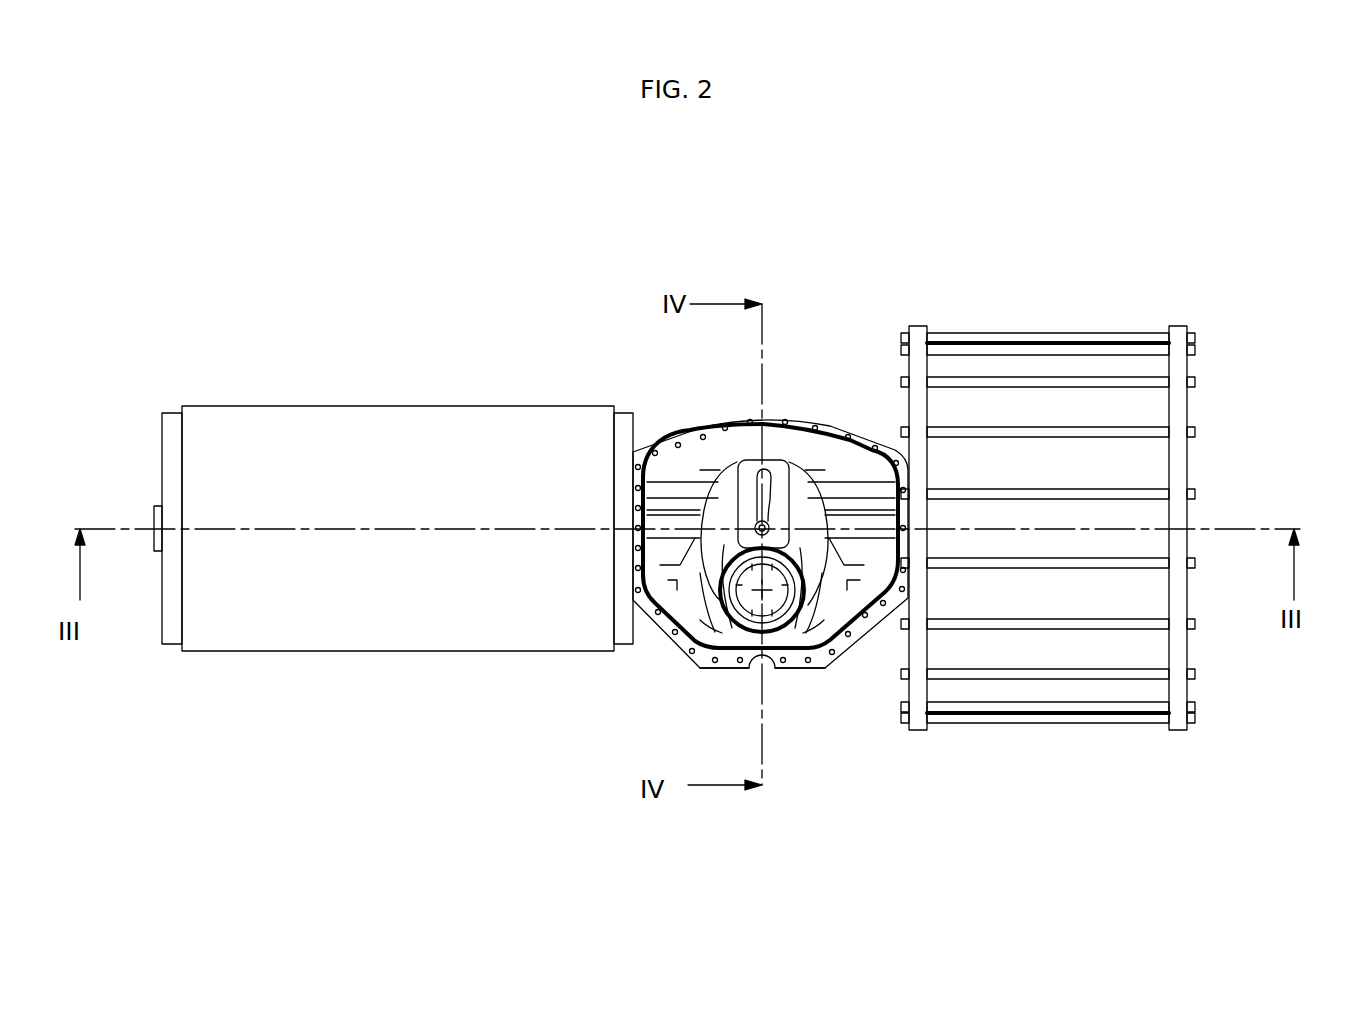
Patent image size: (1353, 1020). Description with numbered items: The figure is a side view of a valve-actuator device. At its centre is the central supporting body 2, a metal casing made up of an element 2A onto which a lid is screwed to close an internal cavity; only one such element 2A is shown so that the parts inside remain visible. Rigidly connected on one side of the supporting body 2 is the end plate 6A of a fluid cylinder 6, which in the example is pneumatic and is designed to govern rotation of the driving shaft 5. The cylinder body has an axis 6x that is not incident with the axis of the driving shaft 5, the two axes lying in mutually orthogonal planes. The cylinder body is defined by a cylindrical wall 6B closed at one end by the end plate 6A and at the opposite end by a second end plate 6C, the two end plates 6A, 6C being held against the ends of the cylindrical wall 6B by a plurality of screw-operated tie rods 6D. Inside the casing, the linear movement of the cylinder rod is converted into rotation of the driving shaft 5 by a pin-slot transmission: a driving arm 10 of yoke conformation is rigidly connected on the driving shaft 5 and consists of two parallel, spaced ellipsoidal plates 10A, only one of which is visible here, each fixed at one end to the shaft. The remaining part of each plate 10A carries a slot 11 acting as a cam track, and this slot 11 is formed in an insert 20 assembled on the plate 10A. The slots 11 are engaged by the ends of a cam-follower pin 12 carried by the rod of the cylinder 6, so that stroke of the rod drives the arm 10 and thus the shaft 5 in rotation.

The central supporting body 2 is at (703, 419).
The element 2A is at (725, 665).
The driving shaft 5 is at (778, 628).
The fluid cylinder 6 is at (1074, 497).
The end plate 6A is at (912, 333).
The cylindrical wall 6B is at (1153, 403).
The end plate 6C is at (1178, 343).
The screw-operated tie rods 6D is at (1120, 669).
The axis 6x is at (1264, 529).
The driving arm 10 is at (793, 460).
The plates 10A is at (722, 548).
The slot 11 is at (752, 468).
The cam-follower pin 12 is at (806, 586).
The insert 20 is at (779, 470).